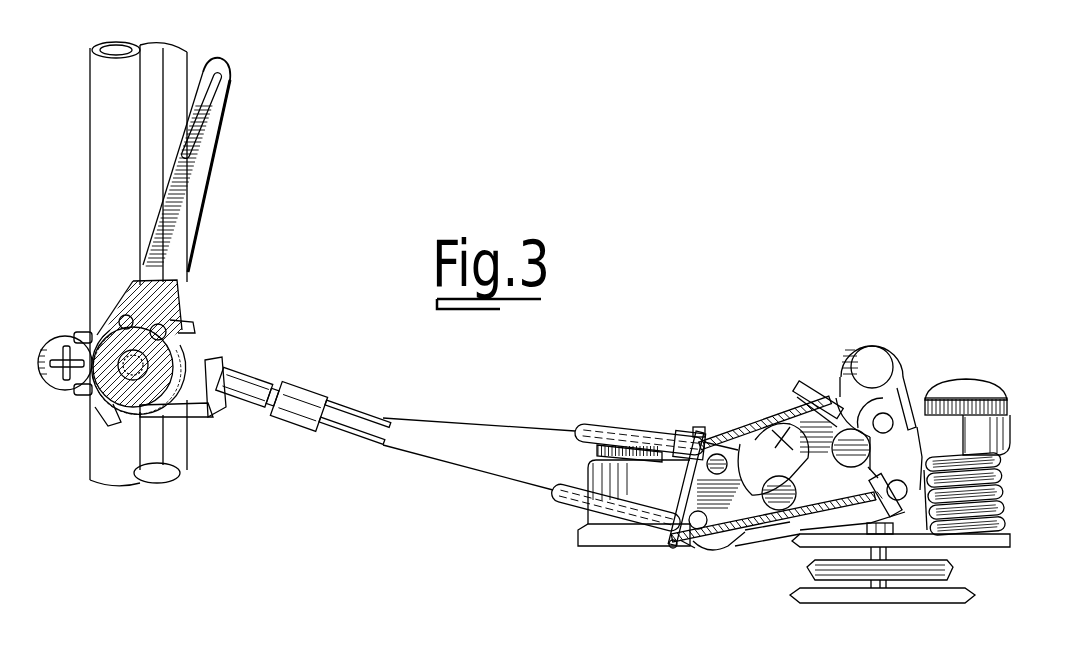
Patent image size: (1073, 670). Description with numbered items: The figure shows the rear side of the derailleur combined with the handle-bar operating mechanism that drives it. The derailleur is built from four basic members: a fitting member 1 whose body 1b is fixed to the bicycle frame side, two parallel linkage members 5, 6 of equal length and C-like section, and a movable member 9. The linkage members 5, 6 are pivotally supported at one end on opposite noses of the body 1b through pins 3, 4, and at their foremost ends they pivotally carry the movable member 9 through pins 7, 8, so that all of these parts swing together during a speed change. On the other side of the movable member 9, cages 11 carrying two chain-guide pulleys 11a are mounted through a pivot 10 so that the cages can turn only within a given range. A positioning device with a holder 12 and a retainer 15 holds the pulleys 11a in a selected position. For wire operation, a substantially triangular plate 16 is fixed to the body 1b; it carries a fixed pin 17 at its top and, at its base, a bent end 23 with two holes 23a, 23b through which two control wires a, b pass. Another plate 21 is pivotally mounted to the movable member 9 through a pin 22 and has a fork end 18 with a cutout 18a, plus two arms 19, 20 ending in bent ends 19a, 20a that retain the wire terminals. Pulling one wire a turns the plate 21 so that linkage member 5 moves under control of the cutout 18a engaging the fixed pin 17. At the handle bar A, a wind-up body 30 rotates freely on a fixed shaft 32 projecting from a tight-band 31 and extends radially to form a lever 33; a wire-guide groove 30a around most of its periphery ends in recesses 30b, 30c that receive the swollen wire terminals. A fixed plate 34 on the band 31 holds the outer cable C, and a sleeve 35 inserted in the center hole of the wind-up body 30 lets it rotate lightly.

The fitting member 1 is at (578, 536).
The body 1b is at (607, 490).
The pin 3 is at (712, 443).
The pin 4 is at (694, 540).
The linkage member 5 is at (762, 440).
The linkage member 6 is at (737, 532).
The pin 7 is at (889, 417).
The pin 8 is at (933, 522).
The movable member 9 is at (1008, 422).
The pivot 10 is at (967, 392).
The cages 11 is at (1012, 540).
The chain-guide pulleys 11a is at (876, 582).
The holder 12 is at (753, 545).
The retainer 15 is at (873, 346).
The triangular plate 16 is at (692, 432).
The fixed pin 17 is at (788, 528).
The fork end 18 is at (719, 452).
The cutout 18a is at (798, 488).
The arm 19 is at (800, 392).
The bent end 19a is at (827, 380).
The arm 20 is at (868, 508).
The bent end 20a is at (913, 510).
The plate 21 is at (790, 415).
The pin 22 is at (866, 457).
The bent end 23 is at (692, 498).
The hole 23a is at (697, 428).
The hole 23b is at (670, 548).
The wind-up body 30 is at (190, 352).
The wire-guide groove 30a is at (108, 332).
The recess 30b is at (166, 332).
The recess 30c is at (120, 316).
The tight-band 31 is at (56, 390).
The fixed shaft 32 is at (150, 360).
The lever 33 is at (204, 192).
The fixed plate 34 is at (197, 412).
The sleeve 35 is at (108, 414).
The handle bar A is at (190, 70).
The outer cable C is at (306, 396).
The control wire a is at (489, 422).
The control wire b is at (455, 465).